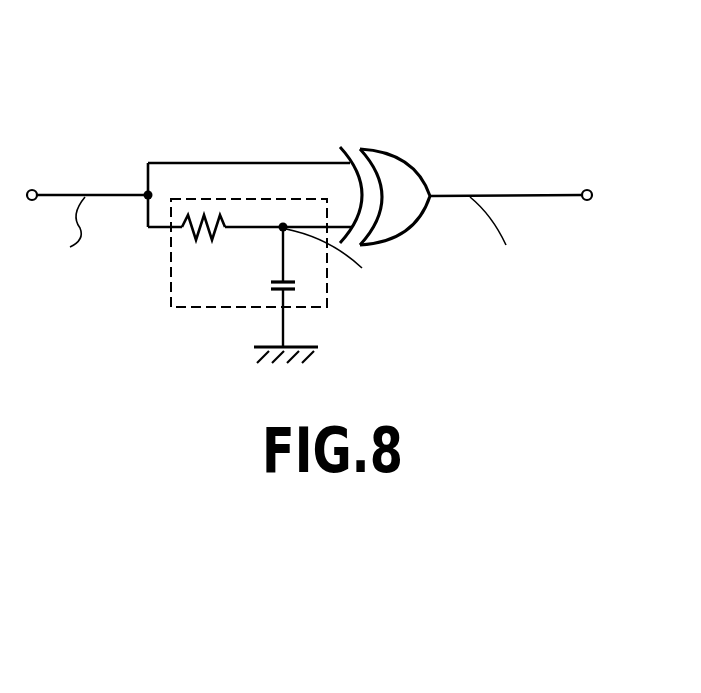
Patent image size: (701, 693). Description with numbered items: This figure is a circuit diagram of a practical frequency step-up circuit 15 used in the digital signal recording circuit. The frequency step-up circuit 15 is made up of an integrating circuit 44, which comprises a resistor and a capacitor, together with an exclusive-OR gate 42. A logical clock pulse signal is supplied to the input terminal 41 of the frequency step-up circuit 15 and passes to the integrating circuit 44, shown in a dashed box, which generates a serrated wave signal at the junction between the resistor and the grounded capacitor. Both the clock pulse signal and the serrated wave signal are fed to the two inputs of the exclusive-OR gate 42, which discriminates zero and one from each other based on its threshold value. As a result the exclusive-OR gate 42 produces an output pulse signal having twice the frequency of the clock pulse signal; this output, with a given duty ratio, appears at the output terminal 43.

The frequency step-up circuit 15 is at (243, 118).
The input terminal 41 is at (34, 189).
The exclusive-OR gate 42 is at (410, 164).
The output terminal 43 is at (588, 188).
The integrating circuit 44 is at (328, 282).